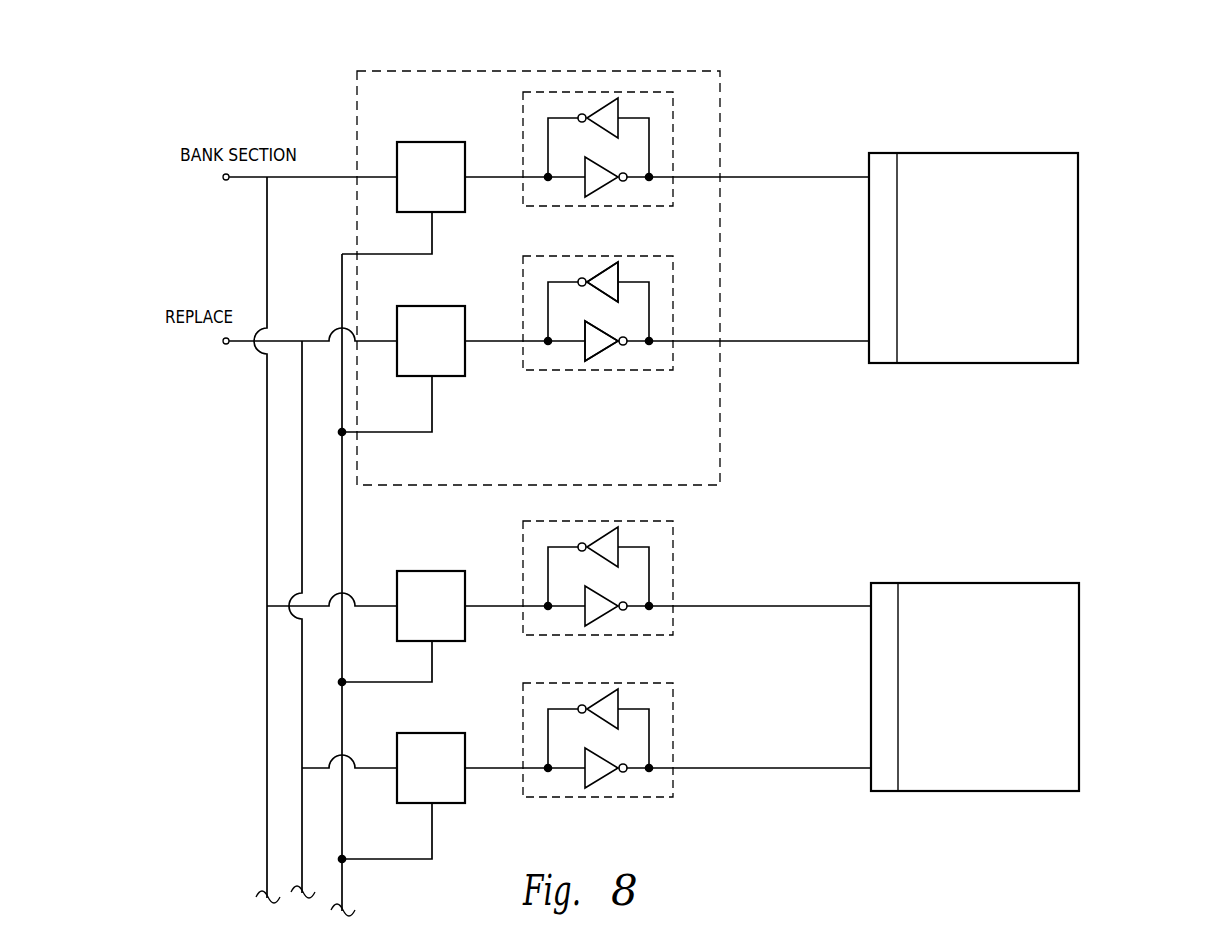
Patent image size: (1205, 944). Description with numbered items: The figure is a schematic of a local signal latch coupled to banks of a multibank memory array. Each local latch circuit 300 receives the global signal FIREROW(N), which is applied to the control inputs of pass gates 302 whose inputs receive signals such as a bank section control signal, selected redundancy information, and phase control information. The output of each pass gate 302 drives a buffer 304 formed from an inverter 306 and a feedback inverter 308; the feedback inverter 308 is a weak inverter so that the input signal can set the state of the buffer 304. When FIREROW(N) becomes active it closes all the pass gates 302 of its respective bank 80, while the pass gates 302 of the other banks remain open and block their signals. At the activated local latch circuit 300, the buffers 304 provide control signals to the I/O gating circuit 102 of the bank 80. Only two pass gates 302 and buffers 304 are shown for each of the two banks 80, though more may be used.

The bank 80 is at (1078, 218).
The I/O gating circuit 102 is at (882, 364).
The local latch circuit 300 is at (721, 442).
The pass gate 302 is at (465, 196).
The buffer 304 is at (523, 113).
The inverter 306 is at (603, 355).
The feedback inverter 308 is at (618, 267).